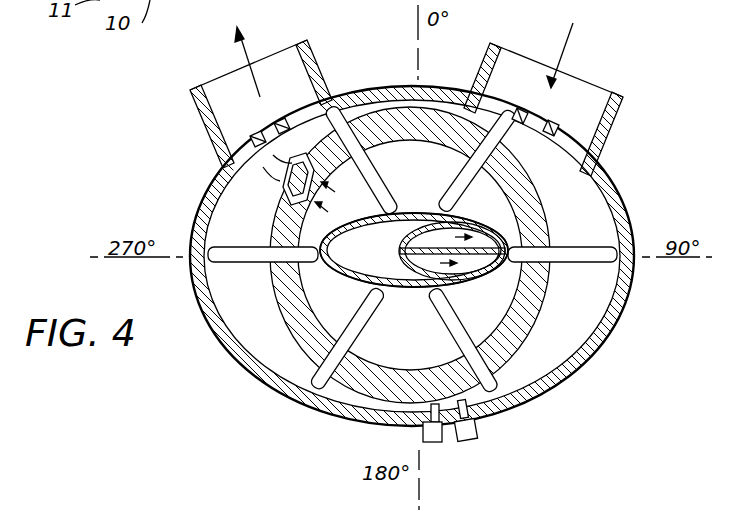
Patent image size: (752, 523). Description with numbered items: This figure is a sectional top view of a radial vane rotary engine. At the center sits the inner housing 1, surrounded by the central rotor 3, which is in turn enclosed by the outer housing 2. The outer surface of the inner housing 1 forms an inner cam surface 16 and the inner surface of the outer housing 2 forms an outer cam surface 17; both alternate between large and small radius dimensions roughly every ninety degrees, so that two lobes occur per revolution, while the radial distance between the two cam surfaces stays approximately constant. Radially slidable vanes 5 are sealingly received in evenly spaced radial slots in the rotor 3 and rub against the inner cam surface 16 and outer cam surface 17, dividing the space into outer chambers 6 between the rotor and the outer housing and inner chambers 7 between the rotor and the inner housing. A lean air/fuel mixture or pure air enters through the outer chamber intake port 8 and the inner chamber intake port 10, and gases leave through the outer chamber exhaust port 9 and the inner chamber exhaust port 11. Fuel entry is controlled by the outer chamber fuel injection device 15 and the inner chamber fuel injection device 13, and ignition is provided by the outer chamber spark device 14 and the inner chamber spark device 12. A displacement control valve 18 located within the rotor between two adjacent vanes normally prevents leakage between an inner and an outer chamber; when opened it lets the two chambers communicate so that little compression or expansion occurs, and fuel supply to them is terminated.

The inner housing 1 is at (374, 228).
The outer housing 2 is at (620, 193).
The central rotor 3 is at (548, 222).
The radially slidable vanes 5 is at (238, 258).
The outer chambers 6 is at (243, 193).
The inner chambers 7 is at (406, 160).
The outer chamber intake port 8 is at (510, 60).
The outer chamber exhaust port 9 is at (220, 100).
The inner chamber intake port 10 is at (445, 300).
The inner chamber exhaust port 11 is at (456, 210).
The inner chamber spark device 12 is at (348, 282).
The inner chamber fuel injection device 13 is at (358, 232).
The outer chamber spark device 14 is at (470, 433).
The outer chamber fuel injection device 15 is at (437, 446).
The inner cam surface 16 is at (400, 297).
The outer cam surface 17 is at (577, 345).
The displacement control valve 18 is at (270, 215).